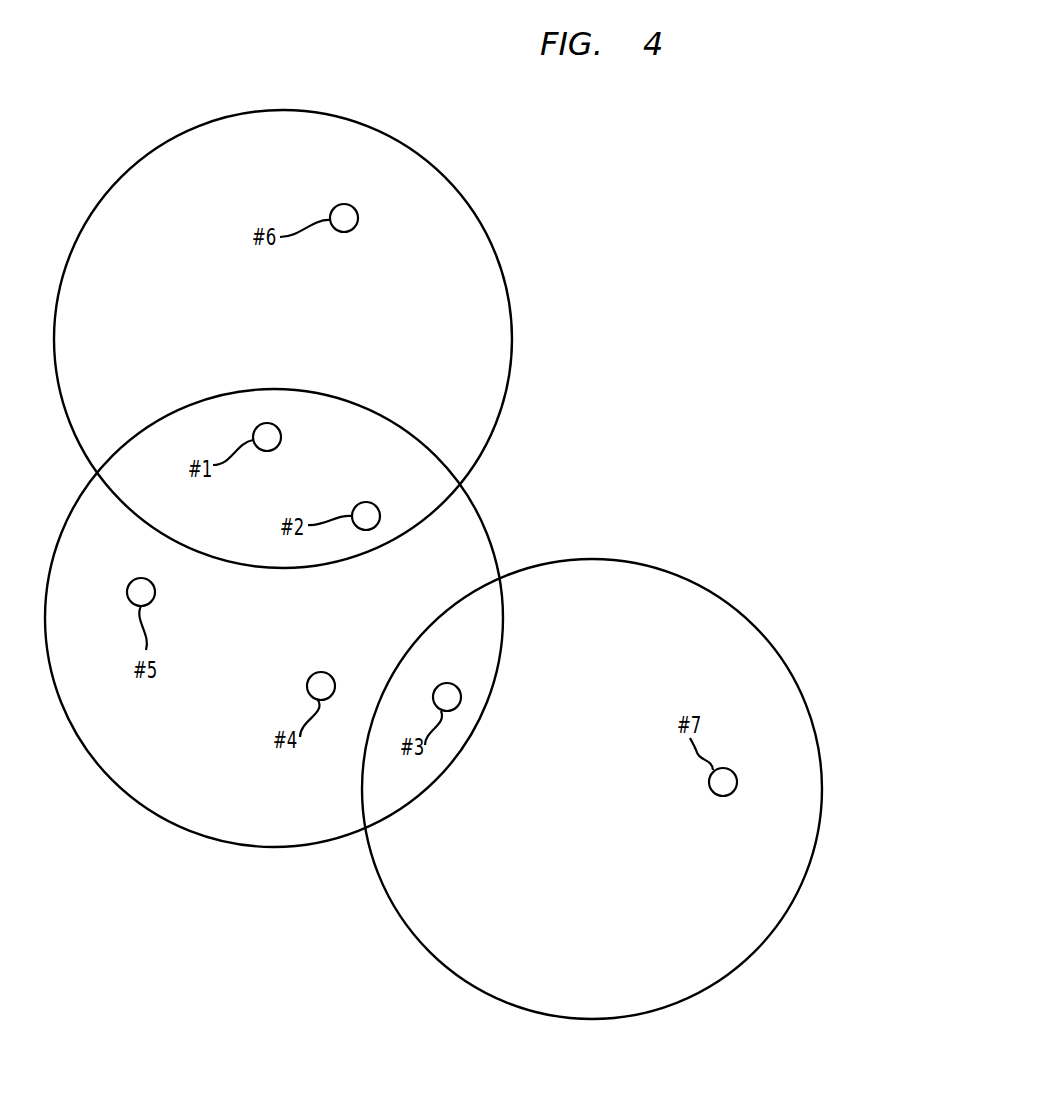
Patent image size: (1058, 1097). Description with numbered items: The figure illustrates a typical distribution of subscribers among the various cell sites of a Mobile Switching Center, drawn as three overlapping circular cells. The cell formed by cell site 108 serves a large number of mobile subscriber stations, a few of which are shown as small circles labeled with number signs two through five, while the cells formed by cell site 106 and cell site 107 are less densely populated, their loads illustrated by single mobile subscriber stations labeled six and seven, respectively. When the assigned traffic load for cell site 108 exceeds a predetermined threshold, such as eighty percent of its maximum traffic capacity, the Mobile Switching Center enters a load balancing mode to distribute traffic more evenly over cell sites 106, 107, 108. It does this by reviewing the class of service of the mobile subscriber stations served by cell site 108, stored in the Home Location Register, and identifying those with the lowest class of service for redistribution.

The cell site 106 is at (490, 240).
The cell site 107 is at (712, 585).
The cell site 108 is at (488, 532).